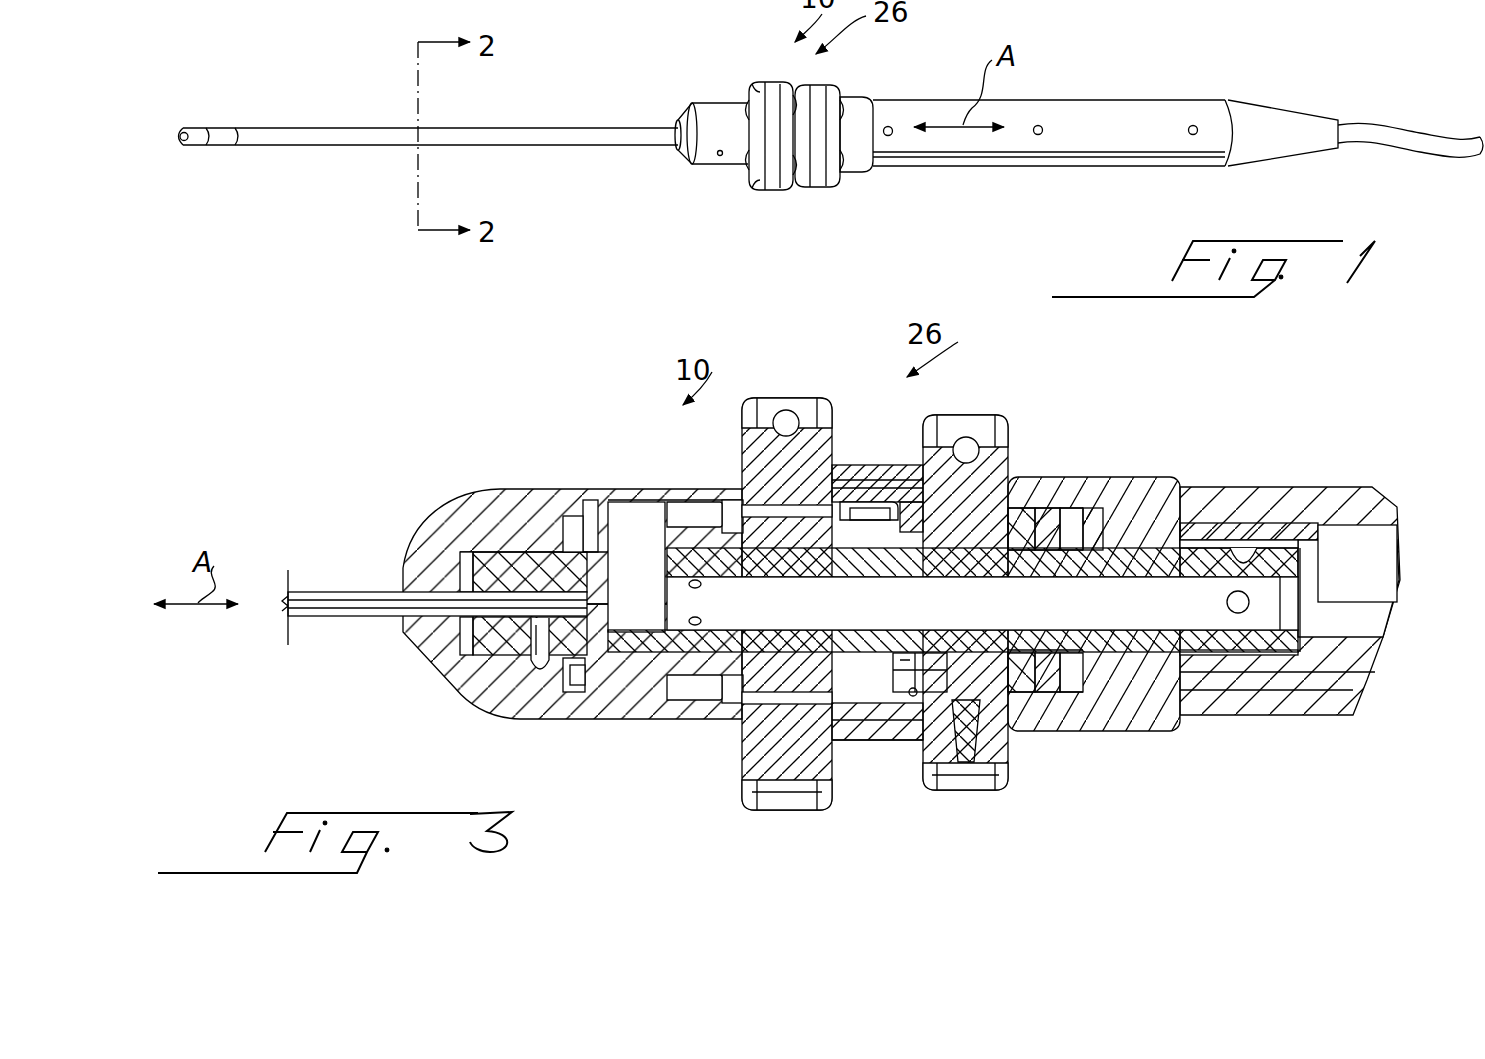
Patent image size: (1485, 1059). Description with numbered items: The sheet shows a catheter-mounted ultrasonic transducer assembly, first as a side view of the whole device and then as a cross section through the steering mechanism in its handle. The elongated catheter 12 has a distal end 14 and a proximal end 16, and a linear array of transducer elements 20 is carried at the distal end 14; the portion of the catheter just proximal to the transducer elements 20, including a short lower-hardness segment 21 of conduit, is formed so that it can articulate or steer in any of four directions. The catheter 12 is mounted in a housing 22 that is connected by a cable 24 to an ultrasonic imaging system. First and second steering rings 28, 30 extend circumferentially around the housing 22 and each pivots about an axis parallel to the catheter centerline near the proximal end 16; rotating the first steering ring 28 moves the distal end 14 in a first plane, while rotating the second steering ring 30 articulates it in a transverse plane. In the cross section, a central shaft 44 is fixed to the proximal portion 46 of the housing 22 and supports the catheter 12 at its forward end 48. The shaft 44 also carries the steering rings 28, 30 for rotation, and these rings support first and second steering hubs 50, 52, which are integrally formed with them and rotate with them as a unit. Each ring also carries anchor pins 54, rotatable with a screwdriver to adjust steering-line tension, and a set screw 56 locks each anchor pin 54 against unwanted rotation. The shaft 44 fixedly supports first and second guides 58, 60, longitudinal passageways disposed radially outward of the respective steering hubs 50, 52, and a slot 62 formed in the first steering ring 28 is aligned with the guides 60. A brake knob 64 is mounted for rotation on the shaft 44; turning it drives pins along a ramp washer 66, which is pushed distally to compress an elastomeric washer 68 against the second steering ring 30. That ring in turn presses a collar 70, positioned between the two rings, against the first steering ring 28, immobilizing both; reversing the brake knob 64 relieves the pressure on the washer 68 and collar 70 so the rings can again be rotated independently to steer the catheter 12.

In FIG. 1, the catheter 12 is at (546, 128).
In FIG. 3, the catheter 12 is at (338, 592).
In FIG. 1, the distal end 14 is at (224, 80).
In FIG. 1, the proximal end 16 is at (663, 162).
In FIG. 1, the transducer elements 20 is at (206, 146).
In FIG. 1, the short segment 21 is at (228, 146).
In FIG. 1, the housing 22 is at (1128, 108).
In FIG. 3, the housing 22 is at (522, 488).
In FIG. 1, the cable 24 is at (1398, 129).
In FIG. 1, the first steering ring 28 is at (772, 82).
In FIG. 3, the first steering ring 28 is at (775, 398).
In FIG. 1, the second steering ring 30 is at (818, 84).
In FIG. 3, the second steering ring 30 is at (980, 415).
In FIG. 3, the central shaft 44 is at (1157, 477).
In FIG. 3, the proximal portion 46 is at (1340, 645).
In FIG. 3, the forward end 48 is at (500, 650).
In FIG. 3, the first steering hub 50 is at (738, 642).
In FIG. 3, the second steering hub 52 is at (898, 642).
In FIG. 3, the anchor pin 54 is at (990, 630).
In FIG. 3, the set screw 56 is at (968, 764).
In FIG. 3, the first guide 58 is at (690, 508).
In FIG. 3, the second guide 60 is at (862, 505).
In FIG. 3, the slot 62 is at (838, 466).
In FIG. 3, the brake knob 64 is at (1157, 742).
In FIG. 3, the ramp washer 66 is at (1068, 504).
In FIG. 3, the elastomeric washer 68 is at (1028, 504).
In FIG. 3, the collar 70 is at (880, 742).